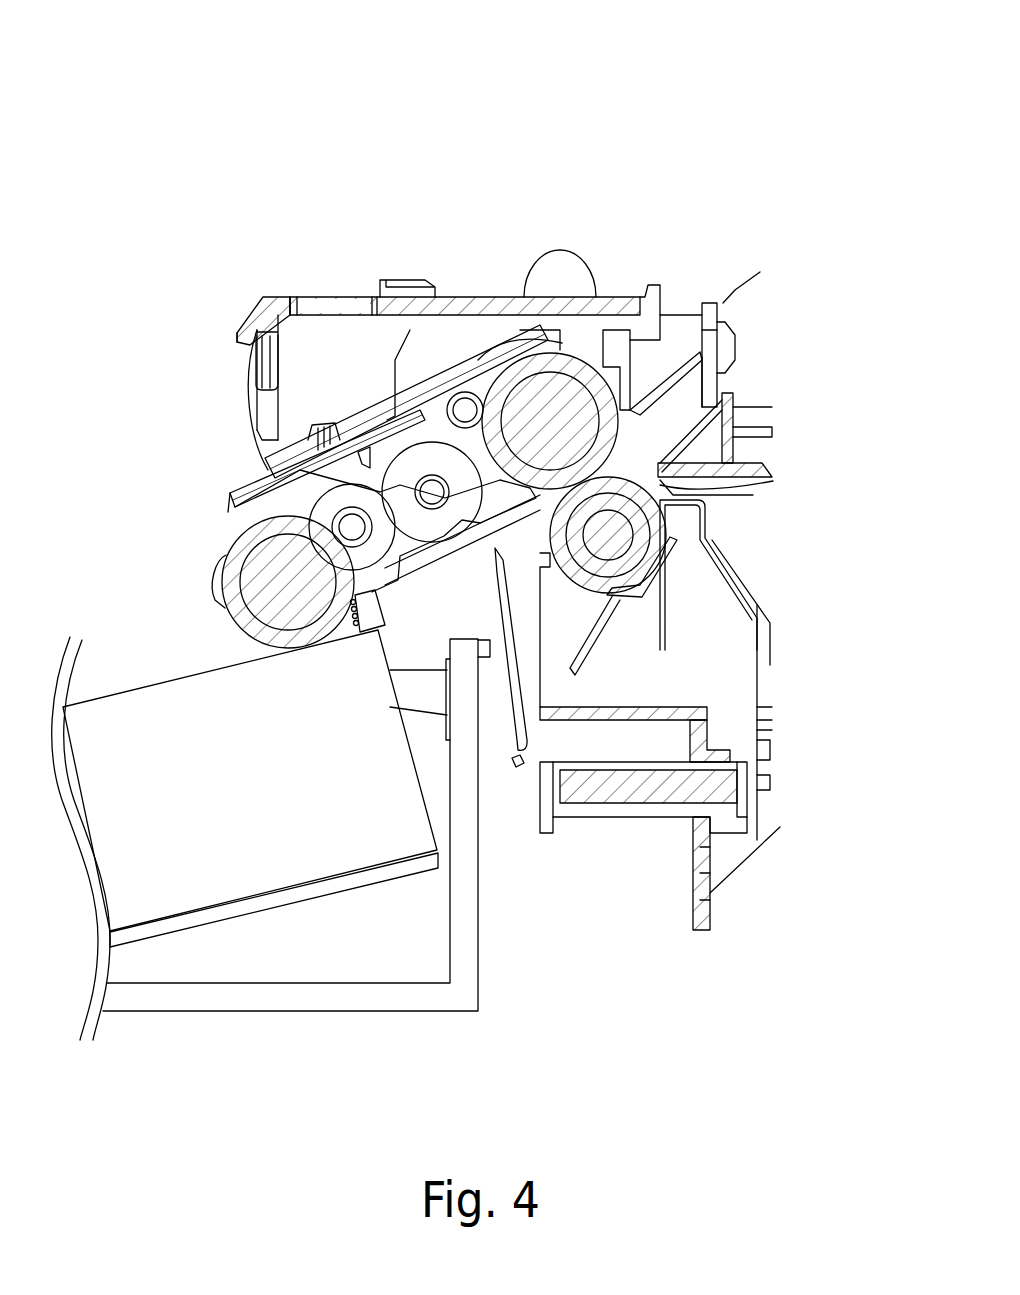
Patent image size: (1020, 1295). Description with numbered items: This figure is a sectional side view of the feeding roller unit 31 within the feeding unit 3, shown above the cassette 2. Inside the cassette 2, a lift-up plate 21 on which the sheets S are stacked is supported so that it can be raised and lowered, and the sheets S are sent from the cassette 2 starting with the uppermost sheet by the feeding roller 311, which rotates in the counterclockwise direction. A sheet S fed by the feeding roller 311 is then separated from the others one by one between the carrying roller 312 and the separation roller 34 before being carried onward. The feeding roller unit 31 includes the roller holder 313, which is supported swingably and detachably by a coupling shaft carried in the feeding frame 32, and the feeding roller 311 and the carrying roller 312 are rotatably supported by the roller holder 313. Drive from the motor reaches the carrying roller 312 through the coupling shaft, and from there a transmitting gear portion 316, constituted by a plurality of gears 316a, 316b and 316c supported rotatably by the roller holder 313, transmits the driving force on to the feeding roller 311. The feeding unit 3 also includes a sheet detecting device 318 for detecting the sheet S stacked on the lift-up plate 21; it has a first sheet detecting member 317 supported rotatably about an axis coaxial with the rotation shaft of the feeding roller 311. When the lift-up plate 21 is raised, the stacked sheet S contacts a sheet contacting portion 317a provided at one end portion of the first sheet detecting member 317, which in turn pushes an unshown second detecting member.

The feeding unit 3 is at (557, 193).
The feeding roller unit 31 is at (461, 360).
The carrying roller 312 is at (533, 410).
The feeding frame 32 is at (611, 296).
The transmitting gear portion 316 is at (175, 207).
The gear 316a is at (262, 331).
The gear 316b is at (405, 473).
The gear 316c is at (387, 417).
The roller holder 313 is at (243, 500).
The feeding roller 311 is at (257, 572).
The first sheet detecting member 317 is at (710, 490).
The separation roller 34 is at (642, 567).
The sheet detecting device 318 is at (488, 550).
The sheet contacting portion 317a is at (383, 620).
The sheet S is at (310, 850).
The lift-up plate 21 is at (255, 905).
The cassette 2 is at (467, 992).